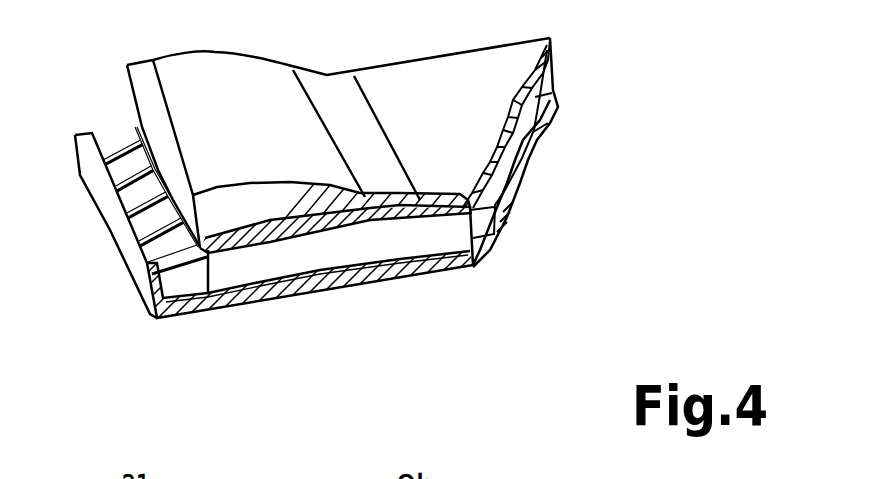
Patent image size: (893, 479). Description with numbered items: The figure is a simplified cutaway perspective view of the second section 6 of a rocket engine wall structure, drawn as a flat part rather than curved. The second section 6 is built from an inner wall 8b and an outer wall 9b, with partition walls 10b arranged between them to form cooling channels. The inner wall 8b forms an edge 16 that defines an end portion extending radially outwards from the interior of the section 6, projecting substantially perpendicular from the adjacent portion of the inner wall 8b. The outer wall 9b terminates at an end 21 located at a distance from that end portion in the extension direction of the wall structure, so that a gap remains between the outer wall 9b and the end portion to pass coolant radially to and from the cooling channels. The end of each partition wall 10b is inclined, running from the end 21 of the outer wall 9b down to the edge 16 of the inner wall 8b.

The second section 6 is at (405, 332).
The inner wall 8b is at (420, 263).
The outer wall 9b is at (303, 232).
The partition wall 10b is at (234, 272).
The edge 16 is at (140, 340).
The end of the outer wall 21 is at (208, 250).